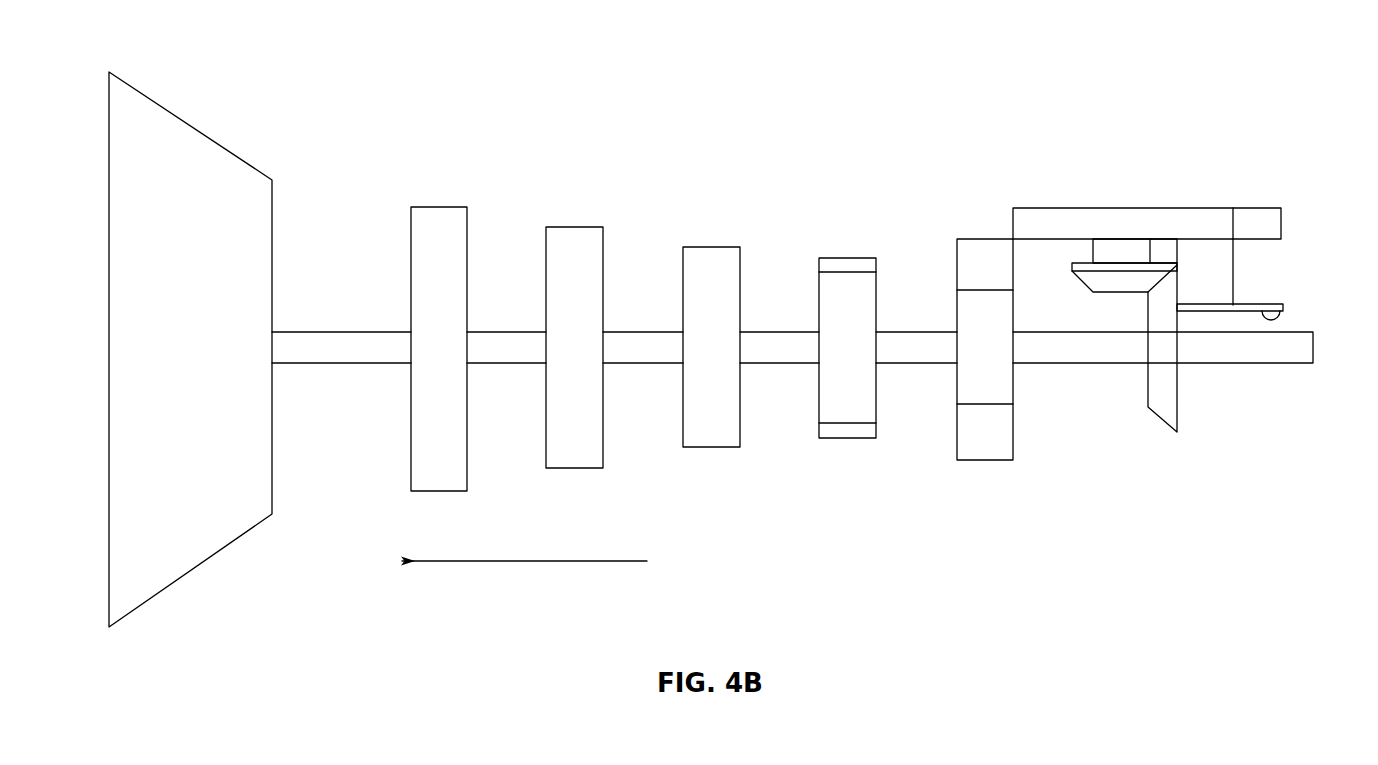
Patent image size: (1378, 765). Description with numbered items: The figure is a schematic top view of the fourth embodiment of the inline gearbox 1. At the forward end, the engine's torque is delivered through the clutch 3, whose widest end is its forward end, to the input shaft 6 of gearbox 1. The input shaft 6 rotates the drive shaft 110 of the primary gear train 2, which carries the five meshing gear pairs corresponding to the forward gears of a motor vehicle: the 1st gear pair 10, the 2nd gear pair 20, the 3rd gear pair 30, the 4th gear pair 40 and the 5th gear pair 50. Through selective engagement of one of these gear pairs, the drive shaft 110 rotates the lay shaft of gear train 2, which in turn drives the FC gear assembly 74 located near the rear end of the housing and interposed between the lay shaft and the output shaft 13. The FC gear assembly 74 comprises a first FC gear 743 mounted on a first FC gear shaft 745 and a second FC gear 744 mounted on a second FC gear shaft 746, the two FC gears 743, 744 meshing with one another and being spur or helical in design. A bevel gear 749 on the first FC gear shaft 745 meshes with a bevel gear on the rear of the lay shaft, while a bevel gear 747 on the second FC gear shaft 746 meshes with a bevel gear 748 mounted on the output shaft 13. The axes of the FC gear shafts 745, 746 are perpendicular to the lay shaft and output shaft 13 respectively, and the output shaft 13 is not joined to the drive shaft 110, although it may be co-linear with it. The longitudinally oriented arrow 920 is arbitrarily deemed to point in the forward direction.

The inline gearbox 1 is at (767, 83).
The primary gear train 2 is at (720, 464).
The clutch 3 is at (214, 562).
The input shaft 6 is at (343, 352).
The 1st gear pair 10 is at (984, 466).
The output shaft 13 is at (1272, 353).
The 2nd gear pair 20 is at (847, 446).
The 3rd gear pair 30 is at (713, 242).
The 4th gear pair 40 is at (577, 222).
The 5th gear pair 50 is at (440, 200).
The FC gear assembly 74 is at (1227, 163).
The drive shaft 110 is at (493, 345).
The first FC gear 743 is at (1265, 220).
The second FC gear 744 is at (1035, 214).
The first FC gear shaft 745 is at (1217, 285).
The second FC gear shaft 746 is at (1110, 250).
The bevel gear 747 is at (1112, 282).
The bevel gear 748 is at (1165, 405).
The bevel gear 749 is at (1263, 332).
The arrow 920 is at (523, 563).